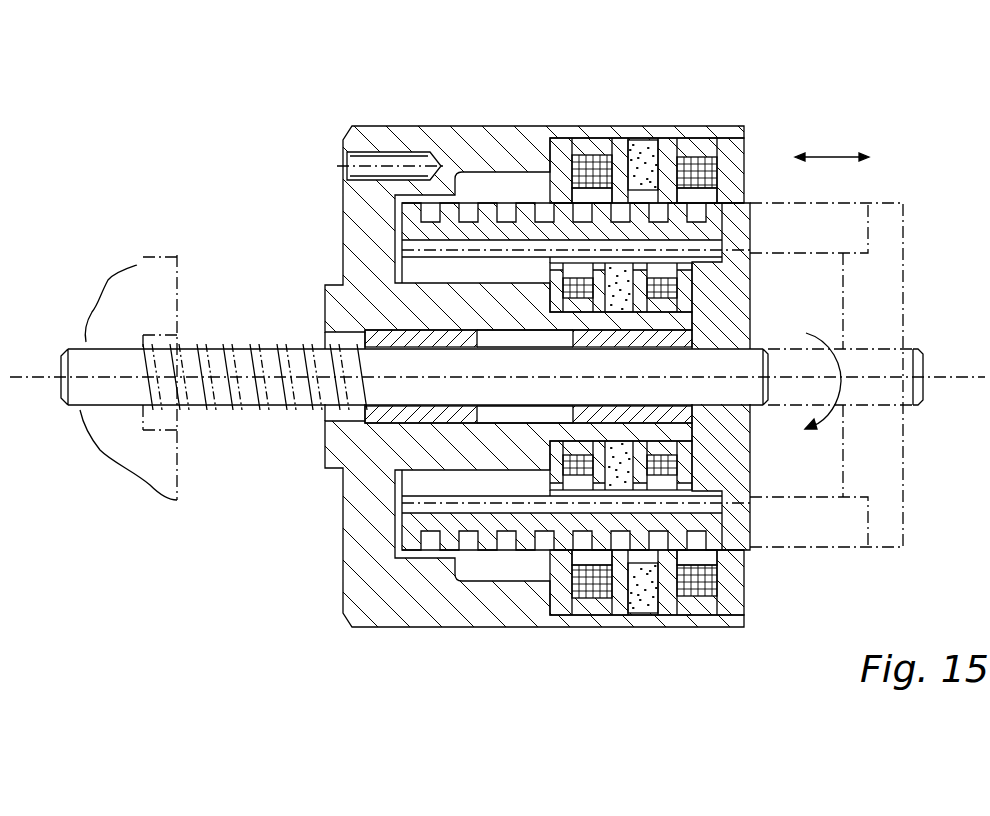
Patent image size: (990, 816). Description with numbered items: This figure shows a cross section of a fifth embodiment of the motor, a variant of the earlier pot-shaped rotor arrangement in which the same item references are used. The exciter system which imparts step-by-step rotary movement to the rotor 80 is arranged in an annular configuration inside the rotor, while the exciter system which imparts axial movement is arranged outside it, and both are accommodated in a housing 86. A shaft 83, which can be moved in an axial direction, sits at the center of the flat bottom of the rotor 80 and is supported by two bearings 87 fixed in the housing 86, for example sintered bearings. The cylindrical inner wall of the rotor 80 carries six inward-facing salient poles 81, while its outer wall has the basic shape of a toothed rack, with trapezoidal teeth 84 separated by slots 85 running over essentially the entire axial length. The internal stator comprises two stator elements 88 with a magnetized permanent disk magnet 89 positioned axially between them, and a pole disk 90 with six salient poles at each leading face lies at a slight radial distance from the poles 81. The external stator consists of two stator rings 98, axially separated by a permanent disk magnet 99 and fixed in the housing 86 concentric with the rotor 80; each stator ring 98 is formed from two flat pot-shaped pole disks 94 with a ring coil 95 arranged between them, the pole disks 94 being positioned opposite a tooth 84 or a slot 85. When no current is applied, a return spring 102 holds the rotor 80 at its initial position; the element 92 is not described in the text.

The rotor 80 is at (760, 472).
The salient poles 81 is at (708, 504).
The shaft 83 is at (80, 367).
The teeth 84 is at (525, 548).
The slots 85 is at (507, 545).
The housing 86 is at (363, 210).
The bearings 87 is at (631, 345).
The stator elements 88 is at (613, 293).
The permanent disk magnet 89 is at (745, 278).
The pole disk 90 is at (683, 463).
The inner stator coil 92 is at (580, 305).
The pole disks 94 is at (620, 177).
The ring coil 95 is at (694, 166).
The stator rings 98 is at (590, 600).
The permanent disk magnet 99 is at (640, 160).
The return spring 102 is at (232, 350).